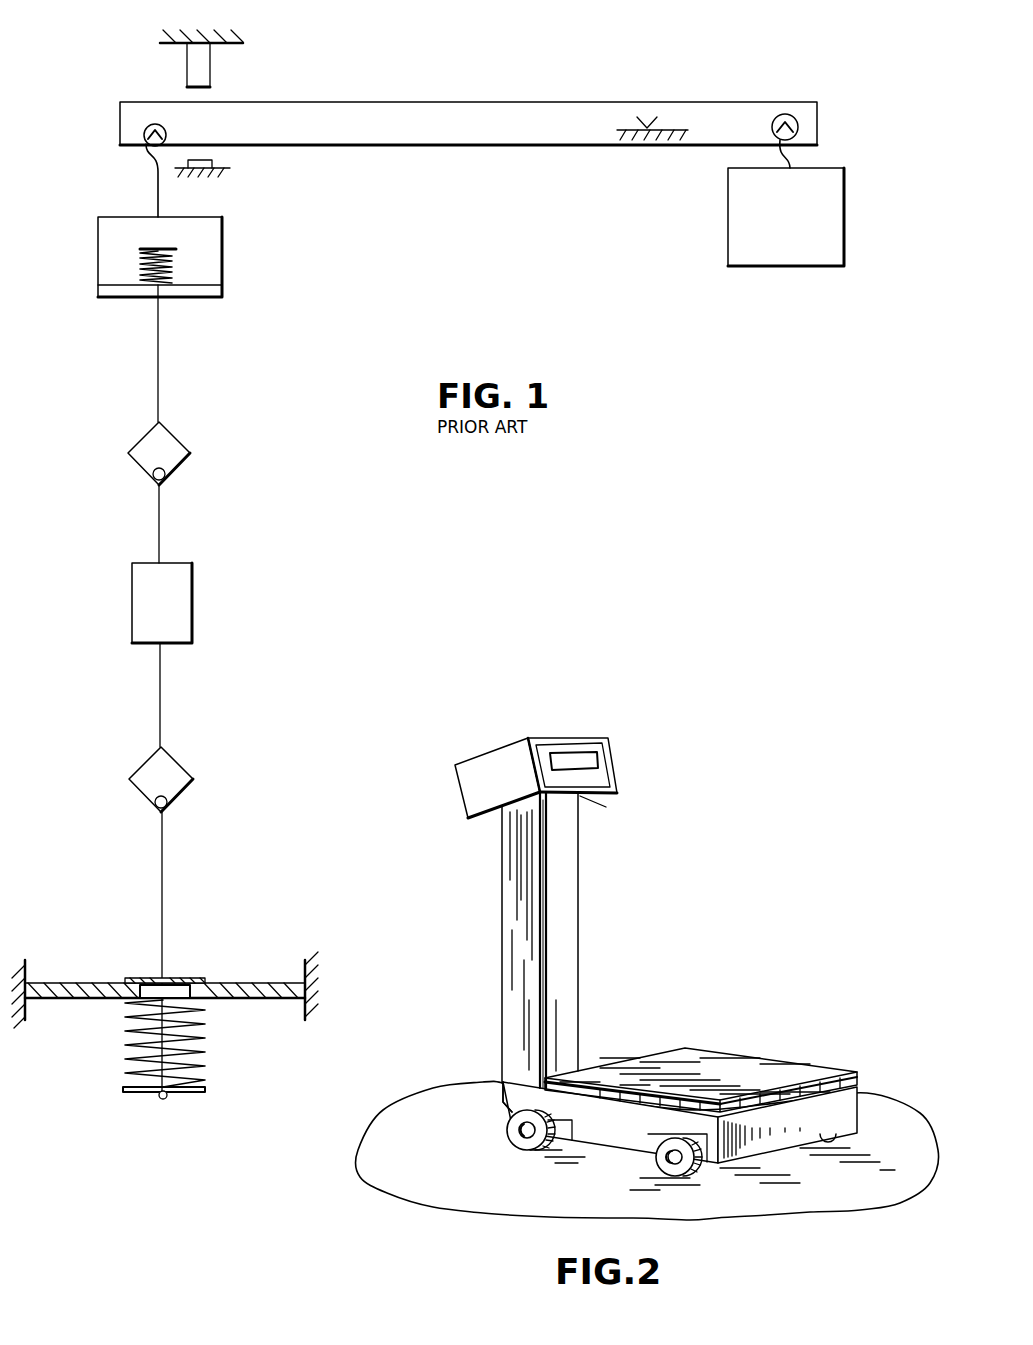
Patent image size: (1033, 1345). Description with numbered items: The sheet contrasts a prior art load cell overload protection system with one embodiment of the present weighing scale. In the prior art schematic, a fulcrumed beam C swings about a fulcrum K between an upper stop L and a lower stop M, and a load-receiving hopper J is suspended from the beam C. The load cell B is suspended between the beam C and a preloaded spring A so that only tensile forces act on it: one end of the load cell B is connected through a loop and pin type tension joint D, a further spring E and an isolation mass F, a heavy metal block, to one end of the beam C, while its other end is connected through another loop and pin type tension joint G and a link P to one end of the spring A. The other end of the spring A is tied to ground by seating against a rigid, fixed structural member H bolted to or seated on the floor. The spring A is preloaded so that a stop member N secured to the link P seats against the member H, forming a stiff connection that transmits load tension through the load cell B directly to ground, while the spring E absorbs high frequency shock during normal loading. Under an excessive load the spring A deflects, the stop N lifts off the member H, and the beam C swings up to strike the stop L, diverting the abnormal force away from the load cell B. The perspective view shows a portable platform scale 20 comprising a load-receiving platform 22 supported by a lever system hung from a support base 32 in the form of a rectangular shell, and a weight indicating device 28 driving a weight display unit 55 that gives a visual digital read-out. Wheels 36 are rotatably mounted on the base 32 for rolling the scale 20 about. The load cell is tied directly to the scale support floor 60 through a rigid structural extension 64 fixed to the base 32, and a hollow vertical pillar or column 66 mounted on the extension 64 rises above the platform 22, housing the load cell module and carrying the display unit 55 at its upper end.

In FIG. 1, the upper stop L is at (203, 62).
In FIG. 1, the fulcrumed beam C is at (338, 103).
In FIG. 1, the lower stop M is at (212, 160).
In FIG. 1, the fulcrum K is at (651, 125).
In FIG. 1, the hopper J is at (728, 223).
In FIG. 1, the spring E is at (150, 263).
In FIG. 1, the isolation mass F is at (210, 270).
In FIG. 1, the loop and pin type tension joint D is at (186, 447).
In FIG. 1, the load cell B is at (193, 578).
In FIG. 1, the loop and pin type tension joint G is at (182, 766).
In FIG. 1, the link P is at (163, 872).
In FIG. 1, the rigid fixed structural member H is at (263, 985).
In FIG. 1, the stop member N is at (186, 980).
In FIG. 1, the preloaded spring A is at (192, 1046).
In FIG. 2, the portable platform scale 20 is at (735, 887).
In FIG. 2, the load-receiving platform 22 is at (745, 1068).
In FIG. 2, the weight indicating device 28 is at (561, 746).
In FIG. 2, the support base 32 is at (612, 1136).
In FIG. 2, the wheels 36 is at (522, 1150).
In FIG. 2, the weight display unit 55 is at (583, 735).
In FIG. 2, the scale support floor 60 is at (462, 1156).
In FIG. 2, the rigid structural extension 64 is at (510, 1096).
In FIG. 2, the hollow vertical pillar or column 66 is at (572, 914).